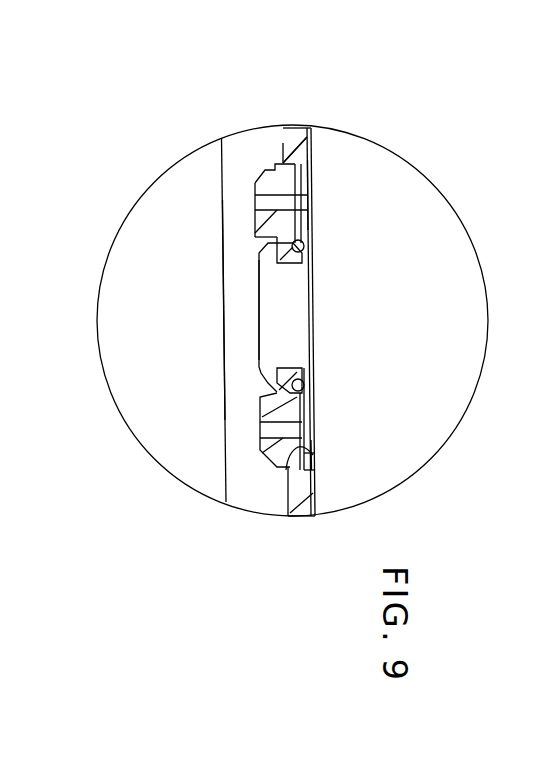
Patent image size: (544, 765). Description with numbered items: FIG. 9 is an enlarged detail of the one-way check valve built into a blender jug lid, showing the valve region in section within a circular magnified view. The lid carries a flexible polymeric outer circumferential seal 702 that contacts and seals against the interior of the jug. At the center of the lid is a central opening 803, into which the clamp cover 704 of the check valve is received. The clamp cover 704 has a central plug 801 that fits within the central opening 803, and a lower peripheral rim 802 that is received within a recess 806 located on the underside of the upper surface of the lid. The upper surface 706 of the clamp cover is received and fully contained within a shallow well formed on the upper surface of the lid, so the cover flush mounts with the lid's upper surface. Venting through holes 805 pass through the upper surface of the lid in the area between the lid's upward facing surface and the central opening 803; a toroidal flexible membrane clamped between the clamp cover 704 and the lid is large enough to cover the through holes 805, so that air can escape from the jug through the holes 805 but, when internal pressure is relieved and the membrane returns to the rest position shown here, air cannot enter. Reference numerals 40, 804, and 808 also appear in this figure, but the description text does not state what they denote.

The shaft 40 is at (385, 157).
The flexible polymeric outer circumferential seal 702 is at (318, 562).
The clamp cover 704 is at (393, 352).
The upper surface of the clamp cover 706 is at (376, 531).
The central plug 801 is at (178, 288).
The lower peripheral rim 802 is at (217, 468).
The central opening 803 is at (272, 496).
The O-ring 804 is at (409, 288).
The venting through holes 805 is at (401, 353).
The recess 806 is at (172, 242).
The upper seal cap 808 is at (218, 129).